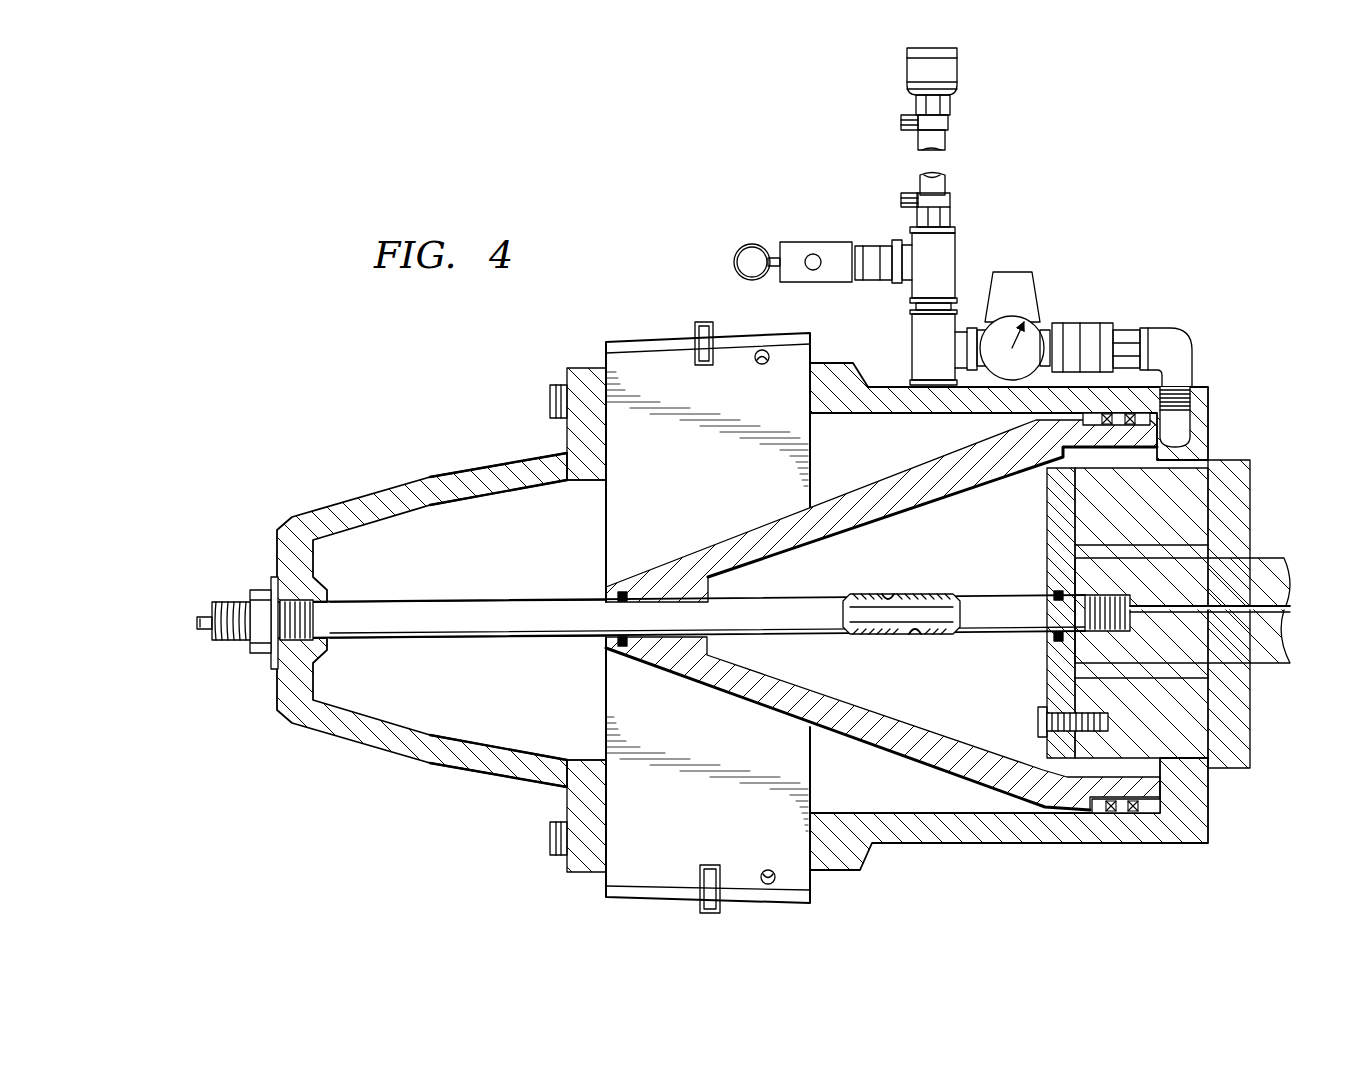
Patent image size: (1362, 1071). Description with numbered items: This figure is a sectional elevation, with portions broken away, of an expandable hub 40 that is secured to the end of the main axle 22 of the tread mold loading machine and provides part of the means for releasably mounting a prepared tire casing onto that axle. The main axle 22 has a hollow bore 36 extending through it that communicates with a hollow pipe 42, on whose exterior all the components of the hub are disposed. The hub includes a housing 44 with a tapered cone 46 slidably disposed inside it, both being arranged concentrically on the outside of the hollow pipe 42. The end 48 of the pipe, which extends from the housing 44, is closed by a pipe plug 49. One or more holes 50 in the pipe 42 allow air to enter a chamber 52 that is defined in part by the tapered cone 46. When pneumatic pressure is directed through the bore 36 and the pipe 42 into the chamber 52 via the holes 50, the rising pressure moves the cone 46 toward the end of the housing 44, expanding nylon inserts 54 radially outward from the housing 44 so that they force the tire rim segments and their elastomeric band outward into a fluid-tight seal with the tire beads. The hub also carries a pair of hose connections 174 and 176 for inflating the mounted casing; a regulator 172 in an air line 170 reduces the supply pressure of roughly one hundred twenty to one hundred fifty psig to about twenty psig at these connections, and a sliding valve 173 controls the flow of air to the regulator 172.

The main axle 22 is at (1268, 558).
The hollow bore 36 is at (1287, 612).
The expandable hub 40 is at (388, 418).
The hollow pipe 42 is at (398, 600).
The housing 44 is at (947, 843).
The tapered cone 46 is at (863, 490).
The end of pipe 48 is at (228, 602).
The pipe plug 49 is at (205, 637).
The holes 50 is at (887, 597).
The chamber 52 is at (985, 556).
The nylon inserts 54 is at (677, 392).
The air line 170 is at (1162, 328).
The regulator 172 is at (1041, 326).
The sliding valve 173 is at (1097, 323).
The hose connection 174 is at (968, 192).
The hose connection 176 is at (905, 380).